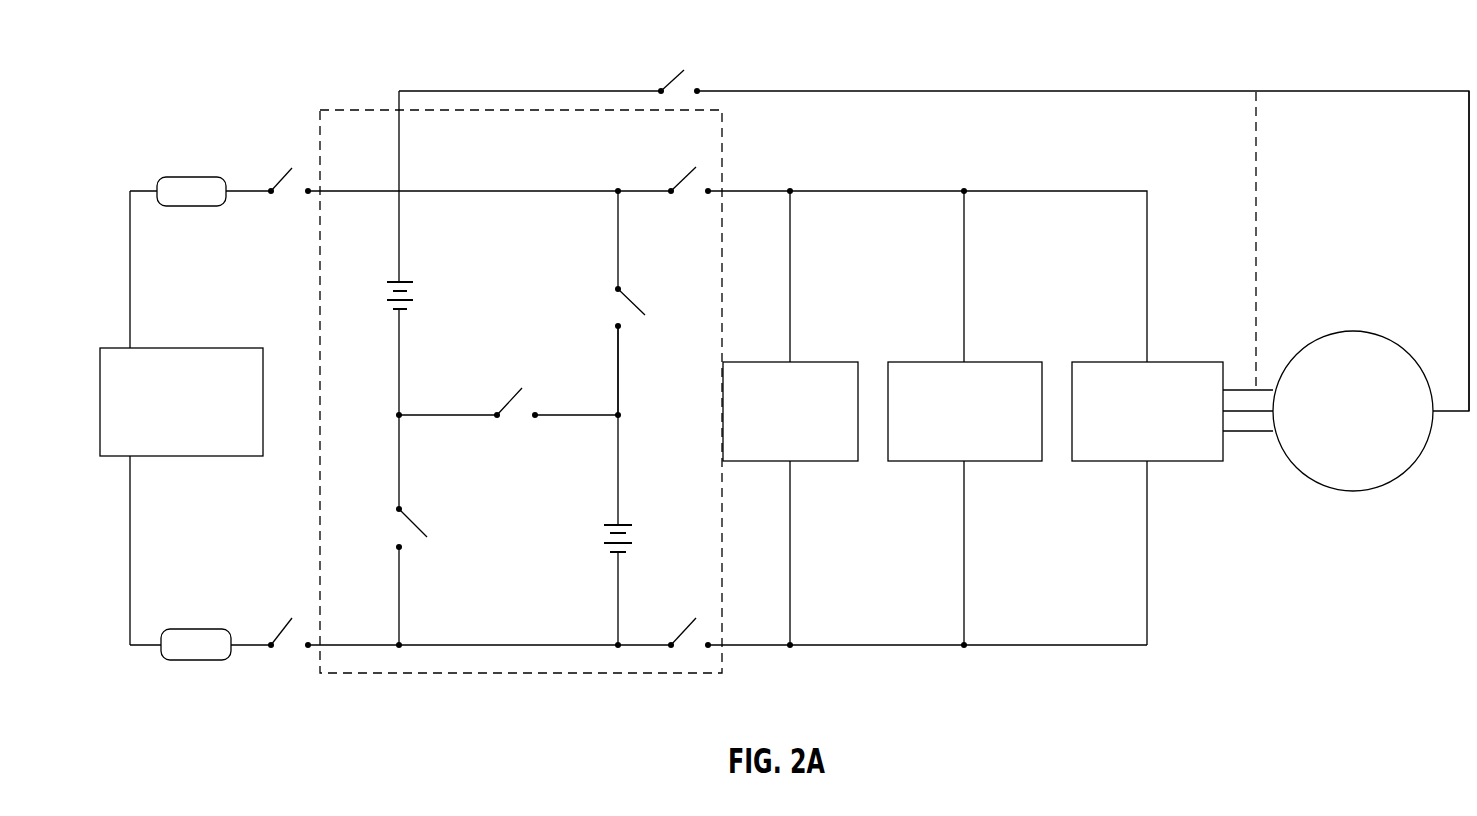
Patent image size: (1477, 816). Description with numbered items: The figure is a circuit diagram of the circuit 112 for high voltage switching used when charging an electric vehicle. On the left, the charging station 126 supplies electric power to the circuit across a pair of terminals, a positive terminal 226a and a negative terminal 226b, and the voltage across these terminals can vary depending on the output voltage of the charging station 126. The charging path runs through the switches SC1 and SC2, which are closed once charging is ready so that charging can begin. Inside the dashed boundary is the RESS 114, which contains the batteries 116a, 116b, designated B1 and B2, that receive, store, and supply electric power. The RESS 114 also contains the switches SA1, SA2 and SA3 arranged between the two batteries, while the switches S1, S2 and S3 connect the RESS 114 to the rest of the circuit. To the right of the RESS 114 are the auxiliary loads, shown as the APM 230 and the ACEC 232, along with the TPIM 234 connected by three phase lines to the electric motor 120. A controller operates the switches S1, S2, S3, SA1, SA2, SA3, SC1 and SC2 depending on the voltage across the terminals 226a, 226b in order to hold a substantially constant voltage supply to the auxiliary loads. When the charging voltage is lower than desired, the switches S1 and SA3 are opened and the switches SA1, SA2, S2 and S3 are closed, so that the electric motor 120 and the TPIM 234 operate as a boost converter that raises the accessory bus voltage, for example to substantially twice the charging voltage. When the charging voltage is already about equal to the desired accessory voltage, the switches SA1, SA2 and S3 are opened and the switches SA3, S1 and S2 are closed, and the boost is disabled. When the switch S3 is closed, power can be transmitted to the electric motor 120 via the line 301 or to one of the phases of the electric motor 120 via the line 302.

The circuit 112 is at (220, 56).
The positive terminal 226a is at (190, 177).
The negative terminal 226b is at (195, 629).
The switch SC1 is at (287, 162).
The switch SC2 is at (289, 614).
The charging station 126 is at (250, 348).
The RESS 114 is at (645, 675).
The battery 116a is at (385, 300).
The battery 116b is at (600, 485).
The battery B1 is at (353, 222).
The battery B2 is at (566, 483).
The switch SA1 is at (382, 575).
The switch SA2 is at (601, 303).
The switch SA3 is at (508, 426).
The switch S1 is at (689, 158).
The switch S2 is at (689, 616).
The switch S3 is at (679, 63).
The APM 230 is at (808, 462).
The ACEC 232 is at (985, 462).
The TPIM 234 is at (1165, 462).
The electric motor 120 is at (1352, 331).
The line 301 is at (1469, 198).
The line 302 is at (1256, 219).